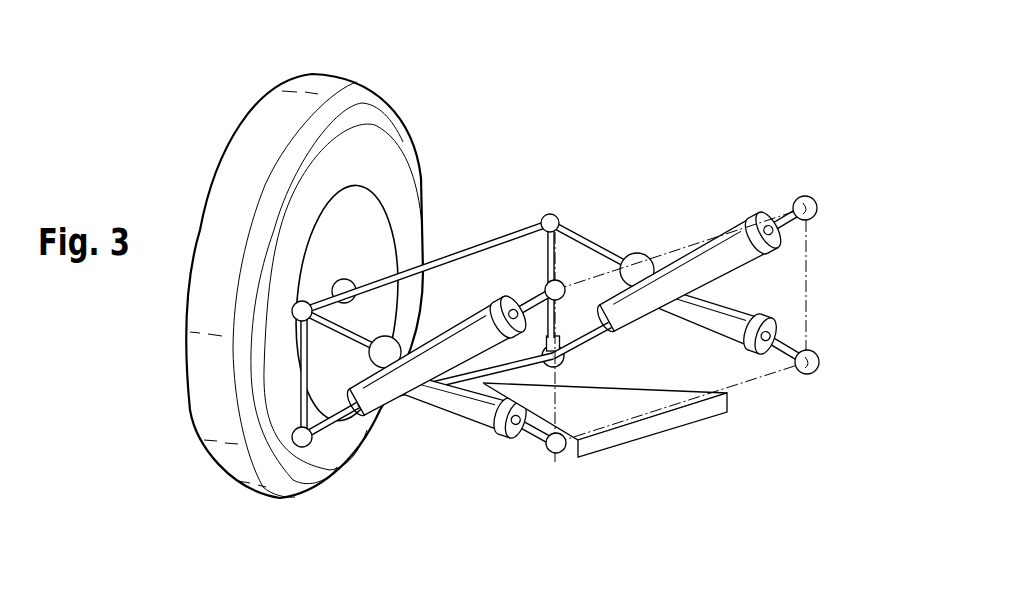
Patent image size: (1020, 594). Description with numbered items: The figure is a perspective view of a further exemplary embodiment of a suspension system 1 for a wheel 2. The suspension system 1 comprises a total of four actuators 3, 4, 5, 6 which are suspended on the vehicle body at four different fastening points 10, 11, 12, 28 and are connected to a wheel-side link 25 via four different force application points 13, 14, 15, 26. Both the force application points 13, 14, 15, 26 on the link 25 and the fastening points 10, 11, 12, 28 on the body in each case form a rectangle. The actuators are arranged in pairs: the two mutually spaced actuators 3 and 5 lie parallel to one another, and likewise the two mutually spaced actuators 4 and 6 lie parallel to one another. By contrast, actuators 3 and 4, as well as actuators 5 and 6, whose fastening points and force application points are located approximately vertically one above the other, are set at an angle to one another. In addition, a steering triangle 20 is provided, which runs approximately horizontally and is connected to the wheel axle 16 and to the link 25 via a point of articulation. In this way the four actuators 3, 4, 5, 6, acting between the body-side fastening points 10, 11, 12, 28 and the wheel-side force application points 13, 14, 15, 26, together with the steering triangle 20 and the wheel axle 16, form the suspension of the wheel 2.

The suspension system 1 is at (516, 100).
The wheel 2 is at (278, 108).
The actuator 3 is at (435, 360).
The actuator 4 is at (455, 410).
The actuator 5 is at (712, 257).
The actuator 6 is at (728, 315).
The fastening point 10 is at (547, 283).
The fastening point 11 is at (548, 454).
The fastening point 12 is at (812, 198).
The force application point 13 is at (312, 447).
The force application point 14 is at (307, 300).
The force application point 15 is at (566, 367).
The wheel axle 16 is at (345, 280).
The steering triangle 20 is at (653, 427).
The wheel-side link 25 is at (474, 277).
The force application point 26 is at (553, 217).
The fastening point 28 is at (811, 373).